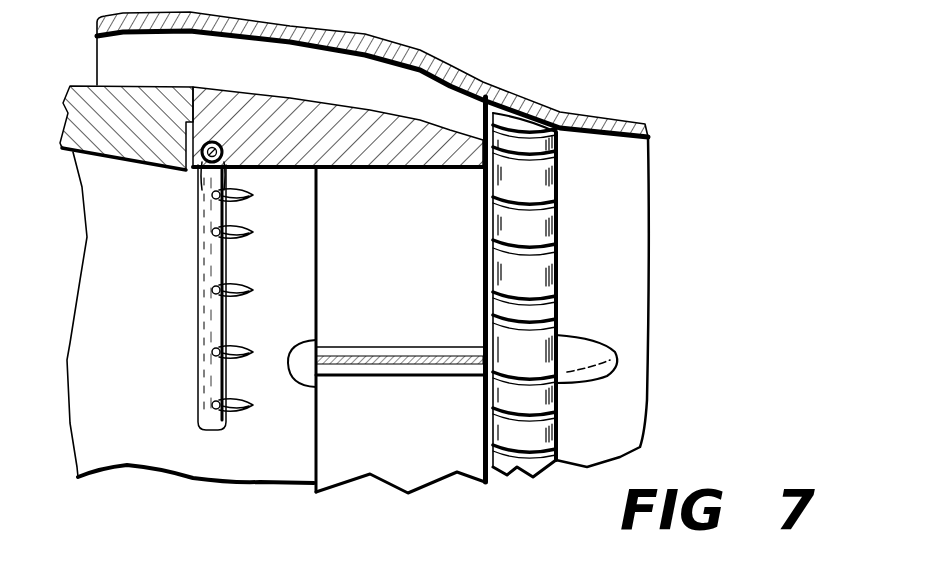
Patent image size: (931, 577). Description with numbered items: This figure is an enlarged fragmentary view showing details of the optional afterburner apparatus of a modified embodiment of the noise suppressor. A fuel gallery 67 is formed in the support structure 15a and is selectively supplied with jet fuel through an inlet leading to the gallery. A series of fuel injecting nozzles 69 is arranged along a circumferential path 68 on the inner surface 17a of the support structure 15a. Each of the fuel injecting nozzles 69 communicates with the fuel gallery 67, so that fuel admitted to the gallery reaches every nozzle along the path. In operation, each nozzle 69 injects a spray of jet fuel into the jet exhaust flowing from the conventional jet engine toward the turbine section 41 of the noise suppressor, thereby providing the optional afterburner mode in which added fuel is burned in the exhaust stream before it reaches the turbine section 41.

The support structure 15a is at (253, 90).
The inner surface 17a is at (288, 170).
The turbine section 41 is at (478, 312).
The fuel gallery 67 is at (200, 170).
The circumferential path 68 is at (197, 322).
The fuel injecting nozzles 69 is at (212, 197).